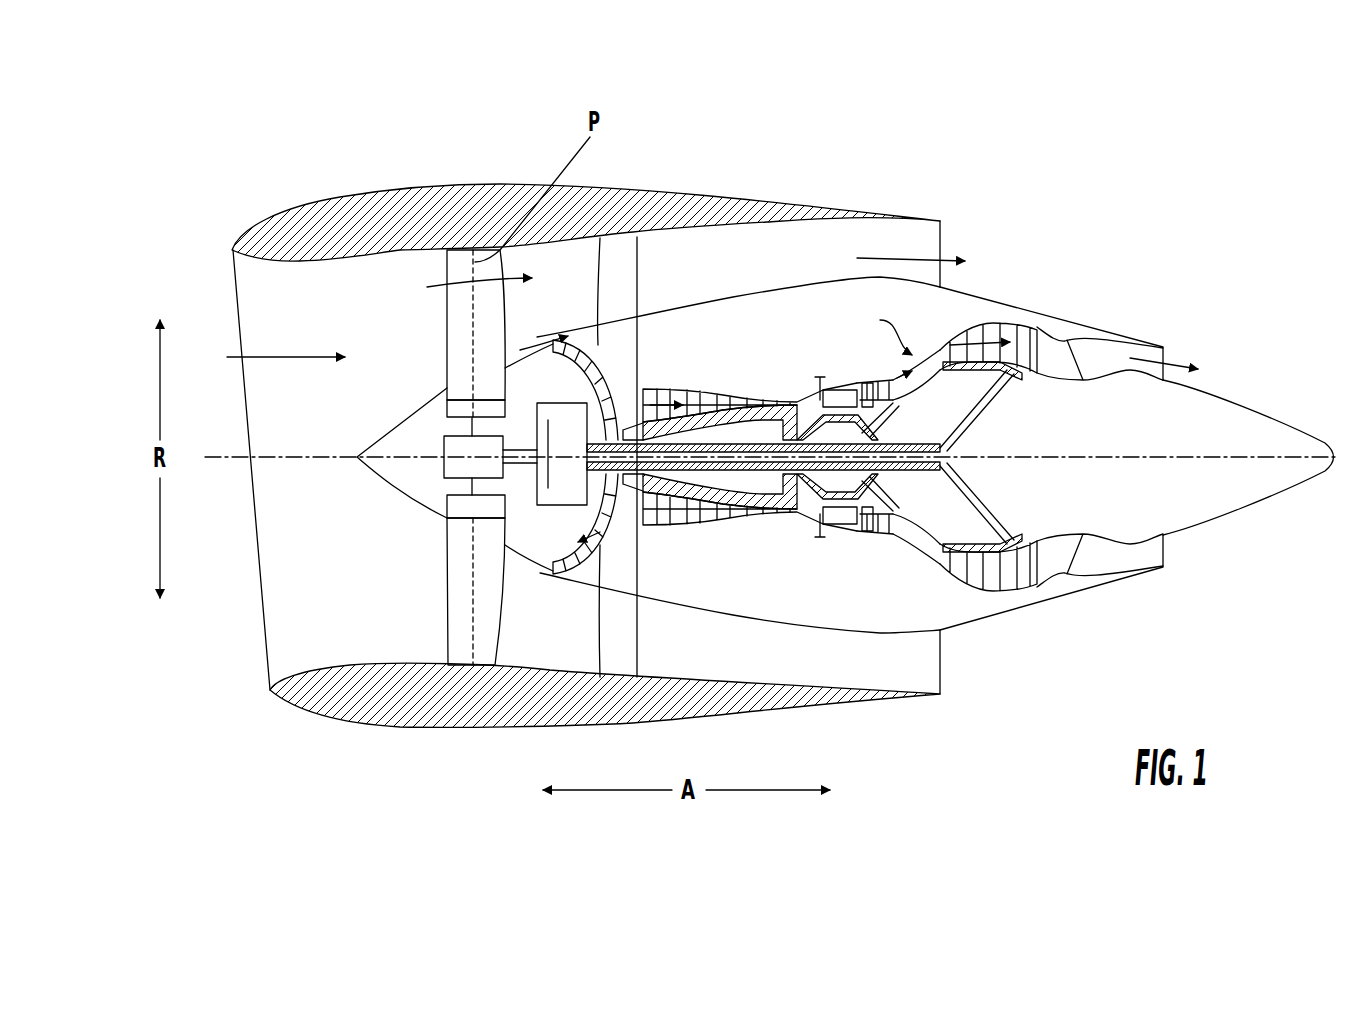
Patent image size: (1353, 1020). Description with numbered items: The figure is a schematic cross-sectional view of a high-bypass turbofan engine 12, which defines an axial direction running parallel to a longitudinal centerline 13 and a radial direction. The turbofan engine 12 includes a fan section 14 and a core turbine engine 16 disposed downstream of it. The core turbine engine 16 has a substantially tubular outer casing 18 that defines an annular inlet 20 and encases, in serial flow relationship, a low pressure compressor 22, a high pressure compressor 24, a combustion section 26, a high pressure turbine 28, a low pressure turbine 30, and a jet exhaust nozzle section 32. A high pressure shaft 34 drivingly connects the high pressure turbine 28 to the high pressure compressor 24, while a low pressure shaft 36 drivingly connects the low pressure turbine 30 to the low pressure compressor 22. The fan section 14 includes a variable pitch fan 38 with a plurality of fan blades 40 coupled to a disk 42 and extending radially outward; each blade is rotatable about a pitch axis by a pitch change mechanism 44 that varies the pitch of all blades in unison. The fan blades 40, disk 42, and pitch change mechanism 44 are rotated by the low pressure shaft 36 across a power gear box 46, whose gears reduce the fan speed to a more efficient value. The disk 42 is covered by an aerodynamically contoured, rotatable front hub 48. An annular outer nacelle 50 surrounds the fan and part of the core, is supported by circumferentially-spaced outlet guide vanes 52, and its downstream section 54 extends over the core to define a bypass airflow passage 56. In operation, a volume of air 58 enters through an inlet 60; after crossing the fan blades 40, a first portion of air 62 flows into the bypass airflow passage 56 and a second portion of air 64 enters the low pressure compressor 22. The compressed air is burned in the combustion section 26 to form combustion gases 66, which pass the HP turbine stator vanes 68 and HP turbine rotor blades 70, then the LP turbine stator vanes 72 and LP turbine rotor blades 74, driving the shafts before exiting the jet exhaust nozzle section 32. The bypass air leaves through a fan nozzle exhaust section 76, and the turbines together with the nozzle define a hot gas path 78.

The turbofan engine 12 is at (1088, 196).
The longitudinal centerline 13 is at (1106, 457).
The fan section 14 is at (405, 268).
The core turbine engine 16 is at (758, 340).
The outer casing 18 is at (800, 618).
The annular inlet 20 is at (530, 566).
The low pressure compressor 22 is at (605, 508).
The high pressure compressor 24 is at (667, 522).
The combustion section 26 is at (833, 529).
The high pressure turbine 28 is at (918, 526).
The low pressure turbine 30 is at (1022, 590).
The jet exhaust nozzle section 32 is at (1084, 572).
The high pressure shaft 34 is at (867, 430).
The low pressure shaft 36 is at (928, 433).
The variable pitch fan 38 is at (405, 510).
The fan blades 40 is at (446, 605).
The disk 42 is at (467, 410).
The pitch change mechanism 44 is at (443, 438).
The power gear box 46 is at (572, 420).
The front hub 48 is at (370, 474).
The outer nacelle 50 is at (492, 728).
The outlet guide vanes 52 is at (642, 268).
The downstream section 54 is at (884, 212).
The bypass airflow passage 56 is at (810, 275).
The volume of air 58 is at (287, 350).
The inlet 60 is at (267, 672).
The first portion of air 62 is at (448, 306).
The second portion of air 64 is at (530, 347).
The combustion gases 66 is at (985, 335).
The HP turbine stator vanes 68 is at (852, 520).
The HP turbine rotor blades 70 is at (872, 505).
The LP turbine stator vanes 72 is at (943, 570).
The LP turbine rotor blades 74 is at (958, 578).
The fan nozzle exhaust section 76 is at (928, 243).
The hot gas path 78 is at (881, 329).